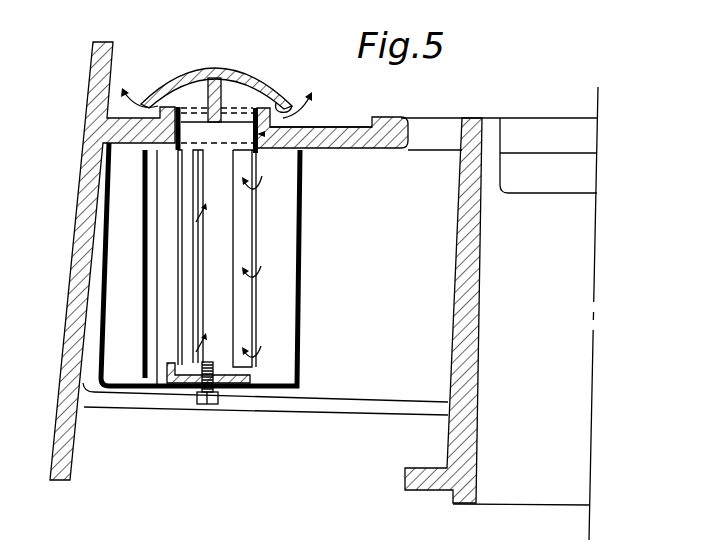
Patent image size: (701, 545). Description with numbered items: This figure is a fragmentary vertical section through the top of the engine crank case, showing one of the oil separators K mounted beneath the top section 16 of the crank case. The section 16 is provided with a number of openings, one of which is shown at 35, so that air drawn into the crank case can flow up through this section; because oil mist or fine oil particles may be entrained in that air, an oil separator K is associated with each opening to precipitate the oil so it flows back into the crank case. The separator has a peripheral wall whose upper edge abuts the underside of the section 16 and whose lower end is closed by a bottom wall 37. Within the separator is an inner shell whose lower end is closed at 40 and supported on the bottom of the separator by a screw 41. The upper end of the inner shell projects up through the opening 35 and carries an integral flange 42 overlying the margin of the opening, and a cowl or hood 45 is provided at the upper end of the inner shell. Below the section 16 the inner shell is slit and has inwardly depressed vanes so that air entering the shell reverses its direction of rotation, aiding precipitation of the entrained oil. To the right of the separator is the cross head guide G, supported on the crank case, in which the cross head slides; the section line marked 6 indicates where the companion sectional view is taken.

The cowl or hood 45 is at (217, 65).
The integral flange 42 is at (266, 100).
The opening 35 is at (311, 130).
The section of the top of the crank case 16 is at (339, 150).
The section line 6- 6 is at (62, 225).
The oil separator K is at (305, 318).
The cross head guide G is at (449, 298).
The screw 41 is at (203, 404).
The closed lower end of inner shell 40 is at (250, 389).
The bottom wall 37 is at (280, 400).